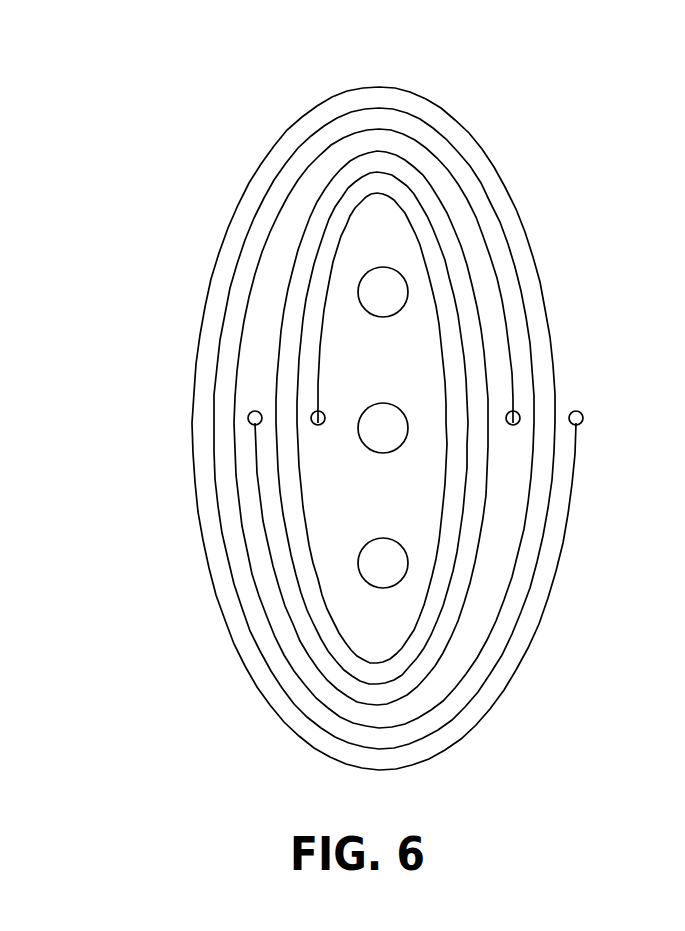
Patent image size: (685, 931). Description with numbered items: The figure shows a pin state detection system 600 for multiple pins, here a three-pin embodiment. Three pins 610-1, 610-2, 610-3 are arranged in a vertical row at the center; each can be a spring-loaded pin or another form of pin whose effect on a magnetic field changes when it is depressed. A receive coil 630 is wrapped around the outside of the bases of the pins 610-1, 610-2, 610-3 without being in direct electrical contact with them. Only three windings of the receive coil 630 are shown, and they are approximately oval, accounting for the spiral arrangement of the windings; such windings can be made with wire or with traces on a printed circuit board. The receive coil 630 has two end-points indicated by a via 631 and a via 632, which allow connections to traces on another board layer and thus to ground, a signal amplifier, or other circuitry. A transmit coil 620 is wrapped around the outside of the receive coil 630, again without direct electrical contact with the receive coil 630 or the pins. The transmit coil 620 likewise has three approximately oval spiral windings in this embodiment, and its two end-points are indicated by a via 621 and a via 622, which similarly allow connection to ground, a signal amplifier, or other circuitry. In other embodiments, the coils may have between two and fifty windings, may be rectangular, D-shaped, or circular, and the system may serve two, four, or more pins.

The pin state detection system 600 is at (174, 78).
The transmit coil 620 is at (550, 365).
The via 621 is at (516, 424).
The via 622 is at (582, 421).
The receive coil 630 is at (273, 378).
The via 631 is at (249, 414).
The via 632 is at (313, 424).
The pin 610-1 is at (371, 315).
The pin 610-2 is at (366, 450).
The pin 610-3 is at (380, 586).